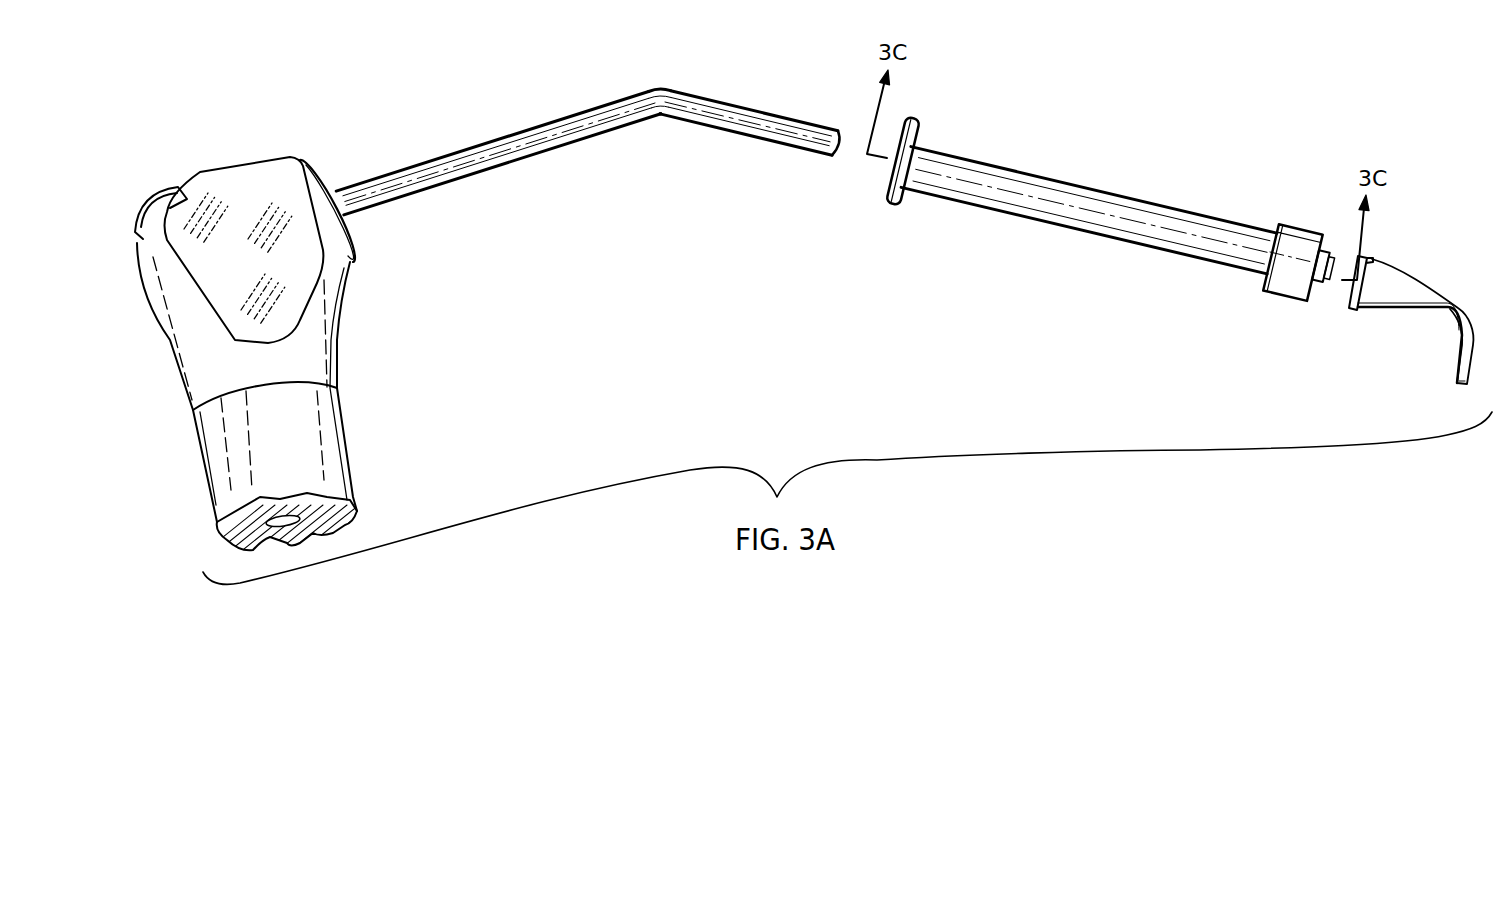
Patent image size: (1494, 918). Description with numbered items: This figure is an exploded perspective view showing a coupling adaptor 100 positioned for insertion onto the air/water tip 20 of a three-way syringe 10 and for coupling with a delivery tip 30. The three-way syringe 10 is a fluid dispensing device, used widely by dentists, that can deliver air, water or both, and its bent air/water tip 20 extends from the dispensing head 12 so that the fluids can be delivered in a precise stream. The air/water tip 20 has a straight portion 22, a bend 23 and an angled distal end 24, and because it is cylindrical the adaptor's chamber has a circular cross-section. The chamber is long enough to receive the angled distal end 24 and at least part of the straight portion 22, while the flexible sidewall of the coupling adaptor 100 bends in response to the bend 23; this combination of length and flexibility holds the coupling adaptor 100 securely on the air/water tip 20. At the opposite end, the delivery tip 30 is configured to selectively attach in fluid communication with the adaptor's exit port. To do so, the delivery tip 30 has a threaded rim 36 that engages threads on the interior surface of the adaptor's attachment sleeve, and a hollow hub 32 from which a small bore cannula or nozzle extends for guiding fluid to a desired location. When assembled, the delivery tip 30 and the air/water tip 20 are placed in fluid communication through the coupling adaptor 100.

The three-way syringe 10 is at (342, 146).
The dispensing head 12 is at (259, 162).
The air/water tip 20 is at (600, 151).
The straight portion 22 is at (579, 117).
The bend 23 is at (665, 88).
The angled distal end 24 is at (746, 112).
The delivery tip 30 is at (1393, 271).
The hollow hub 32 is at (1390, 302).
The threaded rim 36 is at (1353, 308).
The coupling adaptor 100 is at (1096, 193).